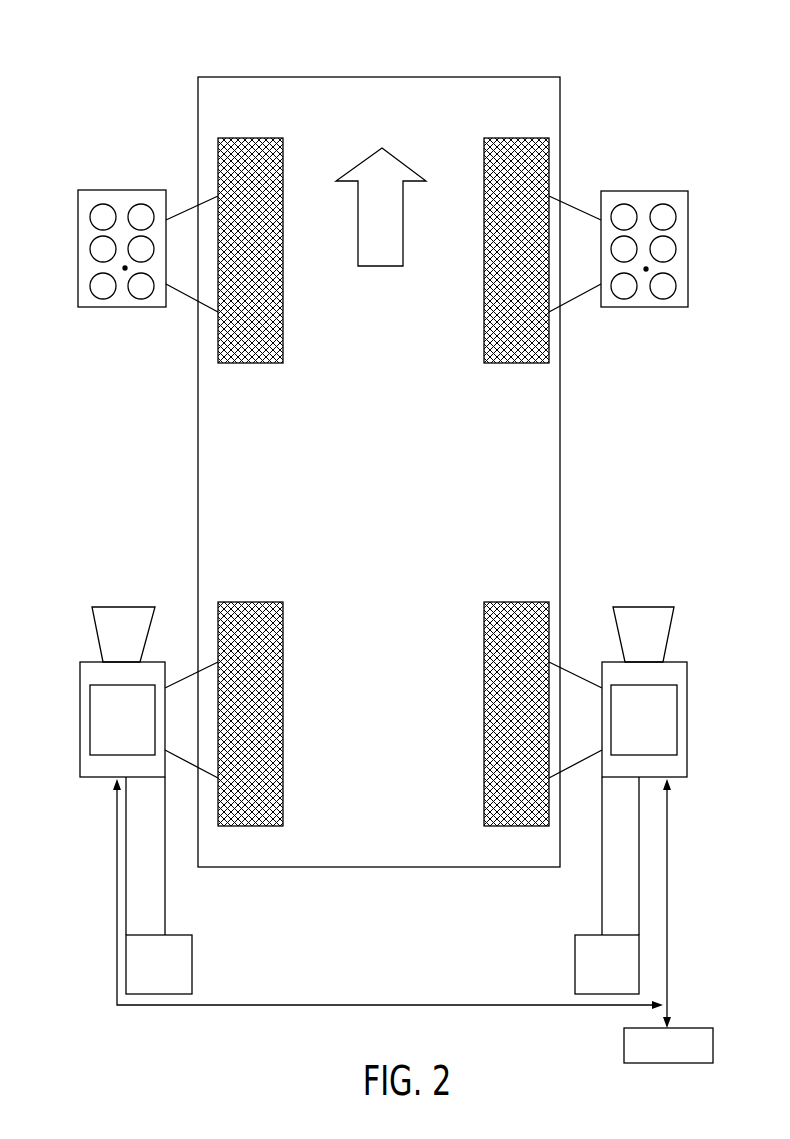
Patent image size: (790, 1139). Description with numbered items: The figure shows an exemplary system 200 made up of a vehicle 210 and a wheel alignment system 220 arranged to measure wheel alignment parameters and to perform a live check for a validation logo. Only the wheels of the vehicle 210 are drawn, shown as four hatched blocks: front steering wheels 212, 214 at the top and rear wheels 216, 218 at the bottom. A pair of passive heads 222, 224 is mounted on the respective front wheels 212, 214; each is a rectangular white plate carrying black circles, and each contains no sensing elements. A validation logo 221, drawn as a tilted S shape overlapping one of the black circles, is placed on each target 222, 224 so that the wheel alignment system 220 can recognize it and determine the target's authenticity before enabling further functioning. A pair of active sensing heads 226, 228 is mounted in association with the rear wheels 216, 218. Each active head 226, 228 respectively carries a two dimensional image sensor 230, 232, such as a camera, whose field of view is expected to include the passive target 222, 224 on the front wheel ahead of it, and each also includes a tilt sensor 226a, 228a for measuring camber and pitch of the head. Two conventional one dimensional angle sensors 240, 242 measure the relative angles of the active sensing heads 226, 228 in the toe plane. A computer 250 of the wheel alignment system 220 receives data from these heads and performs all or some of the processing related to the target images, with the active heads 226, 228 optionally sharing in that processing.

The system 200 is at (588, 59).
The vehicle 210 is at (198, 467).
The wheel 212 is at (258, 138).
The wheel 214 is at (513, 138).
The wheel 216 is at (258, 602).
The wheel 218 is at (514, 602).
The wheel alignment system 220 is at (92, 320).
The validation logo 221 is at (123, 268).
The passive head 222 is at (122, 190).
The passive head 224 is at (645, 191).
The active sensing head 226 is at (122, 692).
The tilt sensor 226a is at (90, 725).
The active sensing head 228 is at (648, 692).
The tilt sensor 228a is at (677, 727).
The image sensor 230 is at (122, 607).
The image sensor 232 is at (638, 607).
The angle sensor 240 is at (178, 935).
The angle sensor 242 is at (575, 935).
The computer 250 is at (695, 1028).